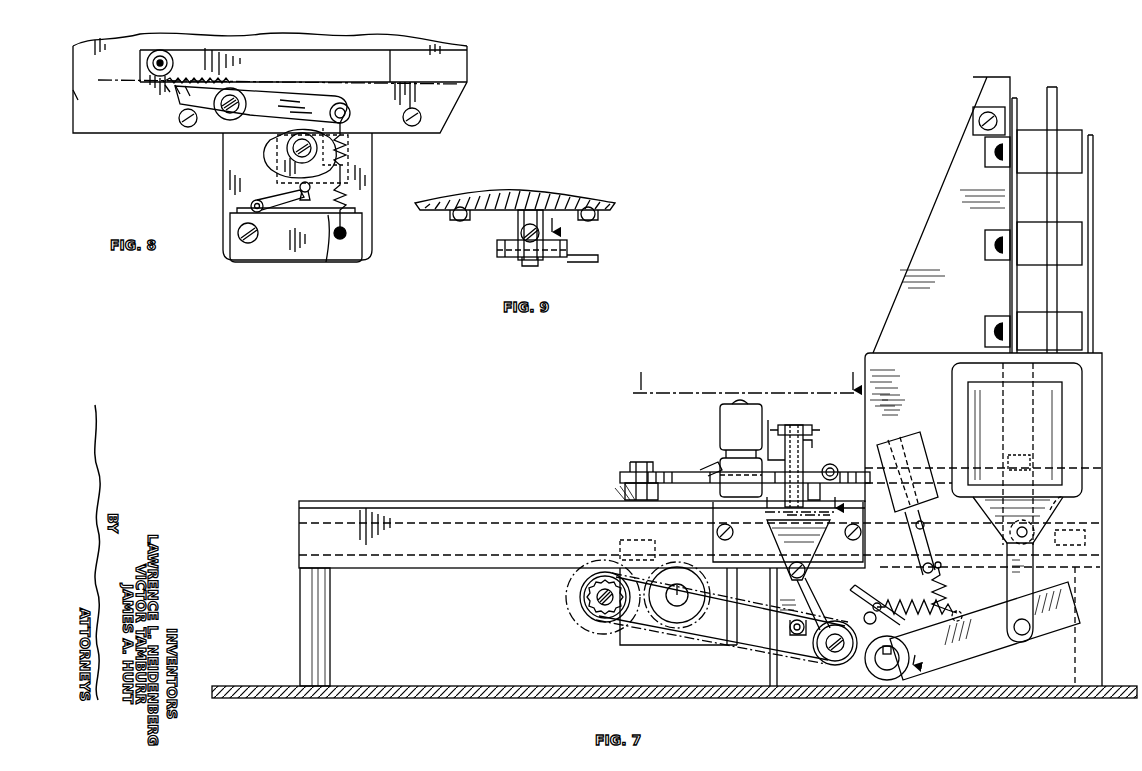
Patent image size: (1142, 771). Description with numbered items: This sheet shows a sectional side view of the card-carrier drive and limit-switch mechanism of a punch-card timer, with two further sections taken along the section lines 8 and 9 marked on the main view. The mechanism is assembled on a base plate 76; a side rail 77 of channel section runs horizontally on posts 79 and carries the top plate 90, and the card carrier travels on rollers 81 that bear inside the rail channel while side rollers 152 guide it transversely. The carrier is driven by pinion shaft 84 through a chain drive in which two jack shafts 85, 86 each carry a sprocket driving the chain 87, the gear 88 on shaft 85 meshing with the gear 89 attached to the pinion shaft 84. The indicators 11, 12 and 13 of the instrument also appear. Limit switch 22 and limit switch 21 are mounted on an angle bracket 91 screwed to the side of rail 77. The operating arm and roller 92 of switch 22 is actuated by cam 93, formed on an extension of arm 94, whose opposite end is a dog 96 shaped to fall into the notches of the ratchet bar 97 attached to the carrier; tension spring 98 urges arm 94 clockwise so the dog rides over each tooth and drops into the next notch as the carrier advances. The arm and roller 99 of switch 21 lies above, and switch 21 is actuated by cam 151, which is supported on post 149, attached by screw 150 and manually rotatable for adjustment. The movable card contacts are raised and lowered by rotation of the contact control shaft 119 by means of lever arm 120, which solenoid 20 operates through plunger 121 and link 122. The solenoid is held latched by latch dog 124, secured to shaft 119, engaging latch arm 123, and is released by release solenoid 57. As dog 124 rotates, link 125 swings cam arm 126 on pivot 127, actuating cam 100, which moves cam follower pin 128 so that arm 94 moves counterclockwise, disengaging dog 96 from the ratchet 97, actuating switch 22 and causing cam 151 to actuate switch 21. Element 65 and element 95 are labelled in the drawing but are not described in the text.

In FIG. 7, the section line 8— 8 is at (745, 375).
In FIG. 7, the section line 9— 9 is at (801, 497).
In FIG. 7, the "Seconds" indicator 11 is at (1072, 236).
In FIG. 7, the "Minutes" indicator 12 is at (1068, 130).
In FIG. 7, the "On" indicator 13 is at (1072, 322).
In FIG. 7, the solenoid 20 is at (1028, 429).
In FIG. 8, the limit switch 21 is at (305, 260).
In FIG. 7, the limit switch 21 is at (722, 410).
In FIG. 8, the limit switch 22 is at (358, 250).
In FIG. 7, the limit switch 22 is at (716, 463).
In FIG. 7, the release solenoid 57 is at (898, 443).
In FIG. 8, the frame 65 is at (458, 69).
In FIG. 7, the frame 65 is at (1090, 548).
In FIG. 7, the base plate 76 is at (1068, 698).
In FIG. 9, the side rail 77 is at (576, 198).
In FIG. 7, the side rail 77 is at (305, 540).
In FIG. 7, the post 79 is at (332, 617).
In FIG. 7, the roller 81 is at (1062, 518).
In FIG. 7, the pinion shaft 84 is at (684, 598).
In FIG. 7, the jack shaft 85 is at (595, 600).
In FIG. 7, the jack shaft 86 is at (822, 658).
In FIG. 7, the chain 87 is at (752, 648).
In FIG. 7, the gear 88 is at (568, 588).
In FIG. 7, the gear 89 is at (700, 610).
In FIG. 8, the top plate 90 is at (342, 40).
In FIG. 7, the top plate 90 is at (370, 503).
In FIG. 8, the angle bracket 91 is at (368, 148).
In FIG. 9, the angle bracket 91 is at (474, 218).
In FIG. 7, the angle bracket 91 is at (712, 520).
In FIG. 8, the operating arm and roller 92 is at (280, 196).
In FIG. 7, the operating arm and roller 92 is at (812, 491).
In FIG. 8, the cam 93 is at (348, 165).
In FIG. 7, the cam 93 is at (785, 470).
In FIG. 8, the arm 94 is at (325, 96).
In FIG. 7, the arm 94 is at (818, 470).
In FIG. 8, the pivot 95 is at (232, 100).
In FIG. 7, the pivot 95 is at (710, 466).
In FIG. 8, the dog 96 is at (168, 90).
In FIG. 7, the dog 96 is at (667, 468).
In FIG. 8, the ratchet bar 97 is at (198, 55).
In FIG. 7, the ratchet bar 97 is at (620, 486).
In FIG. 8, the tension spring 98 is at (350, 118).
In FIG. 7, the tension spring 98 is at (836, 466).
In FIG. 8, the arm and roller 99 is at (308, 195).
In FIG. 7, the arm and roller 99 is at (795, 425).
In FIG. 9, the cam 100 is at (568, 242).
In FIG. 7, the cam 100 is at (776, 540).
In FIG. 7, the contact control shaft 119 is at (885, 675).
In FIG. 7, the lever arm 120 is at (992, 642).
In FIG. 7, the plunger 121 is at (1000, 534).
In FIG. 7, the link 122 is at (1010, 574).
In FIG. 7, the latch arm 123 is at (903, 575).
In FIG. 7, the latch dog 124 is at (880, 616).
In FIG. 9, the link 125 is at (580, 262).
In FIG. 7, the link 125 is at (790, 628).
In FIG. 7, the cam arm 126 is at (785, 590).
In FIG. 9, the pivot 127 is at (525, 264).
In FIG. 7, the pivot 127 is at (788, 574).
In FIG. 9, the cam follower pin 128 is at (518, 230).
In FIG. 7, the cam follower pin 128 is at (787, 515).
In FIG. 7, the post 149 is at (822, 441).
In FIG. 8, the screw 150 is at (287, 148).
In FIG. 8, the cam 151 is at (278, 166).
In FIG. 7, the cam 151 is at (768, 420).
In FIG. 7, the side roller 152 is at (620, 545).